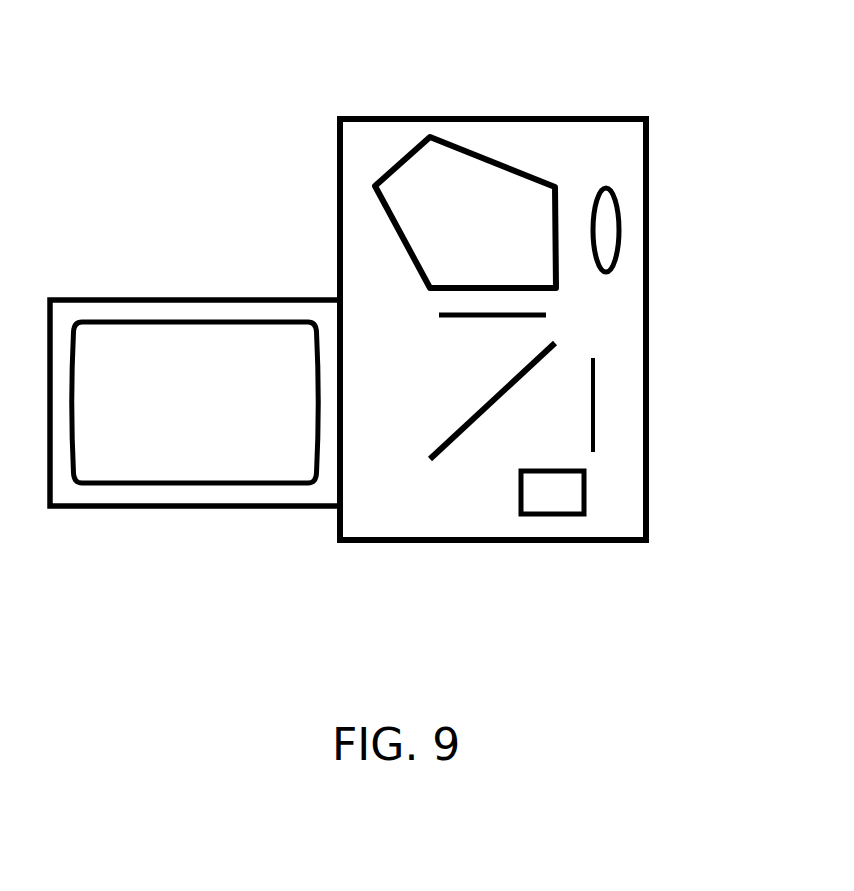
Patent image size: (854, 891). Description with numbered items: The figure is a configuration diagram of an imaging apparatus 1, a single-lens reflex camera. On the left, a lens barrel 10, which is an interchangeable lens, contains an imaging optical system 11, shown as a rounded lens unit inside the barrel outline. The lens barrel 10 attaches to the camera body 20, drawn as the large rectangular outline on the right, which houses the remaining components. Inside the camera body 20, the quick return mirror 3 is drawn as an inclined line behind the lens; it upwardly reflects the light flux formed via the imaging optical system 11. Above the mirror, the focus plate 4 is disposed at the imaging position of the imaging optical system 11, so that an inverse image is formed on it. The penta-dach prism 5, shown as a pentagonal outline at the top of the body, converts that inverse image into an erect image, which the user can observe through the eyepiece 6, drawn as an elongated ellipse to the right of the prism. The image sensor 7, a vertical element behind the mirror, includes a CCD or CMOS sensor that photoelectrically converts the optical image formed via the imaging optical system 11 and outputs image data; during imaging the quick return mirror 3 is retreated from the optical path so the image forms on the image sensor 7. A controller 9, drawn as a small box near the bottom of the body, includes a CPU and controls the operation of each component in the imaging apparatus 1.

The imaging apparatus 1 is at (715, 74).
The quick return mirror 3 is at (465, 433).
The focus plate 4 is at (473, 317).
The penta-dach prism 5 is at (400, 158).
The eyepiece 6 is at (620, 227).
The image sensor 7 is at (595, 403).
The controller 9 is at (563, 517).
The lens barrel 10 is at (248, 297).
The imaging optical system 11 is at (153, 320).
The camera body 20 is at (648, 517).